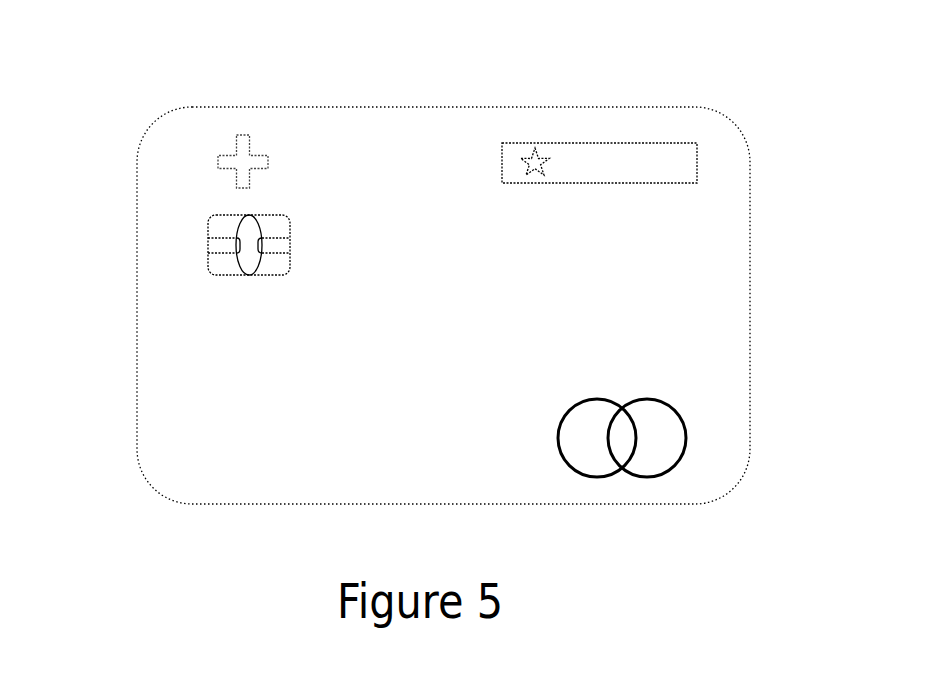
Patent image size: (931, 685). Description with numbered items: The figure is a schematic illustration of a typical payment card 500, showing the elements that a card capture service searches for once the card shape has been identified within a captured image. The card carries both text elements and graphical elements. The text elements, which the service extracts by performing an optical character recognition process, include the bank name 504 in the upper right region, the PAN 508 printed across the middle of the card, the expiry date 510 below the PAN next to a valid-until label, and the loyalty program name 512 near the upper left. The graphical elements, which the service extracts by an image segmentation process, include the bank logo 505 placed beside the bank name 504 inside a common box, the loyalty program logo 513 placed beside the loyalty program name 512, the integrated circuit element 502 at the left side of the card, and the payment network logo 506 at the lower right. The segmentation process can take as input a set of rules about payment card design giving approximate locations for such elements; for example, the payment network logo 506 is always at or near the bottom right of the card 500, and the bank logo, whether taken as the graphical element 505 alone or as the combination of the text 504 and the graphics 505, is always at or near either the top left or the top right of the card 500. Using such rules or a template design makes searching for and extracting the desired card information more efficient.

The payment card 500 is at (135, 82).
The integrated circuit element 502 is at (203, 252).
The bank name 504 is at (667, 142).
The bank logo 505 is at (536, 147).
The payment network logo 506 is at (622, 480).
The PAN 508 is at (627, 330).
The expiry date 510 is at (488, 462).
The loyalty program name 512 is at (335, 142).
The loyalty program logo 513 is at (243, 136).